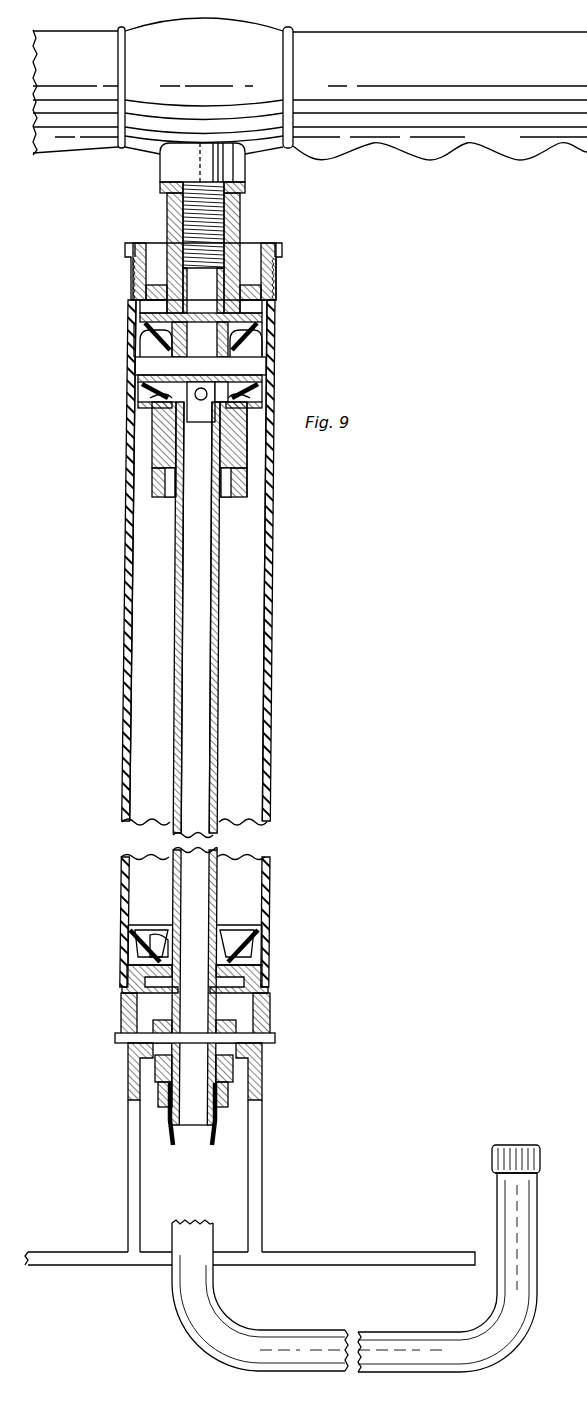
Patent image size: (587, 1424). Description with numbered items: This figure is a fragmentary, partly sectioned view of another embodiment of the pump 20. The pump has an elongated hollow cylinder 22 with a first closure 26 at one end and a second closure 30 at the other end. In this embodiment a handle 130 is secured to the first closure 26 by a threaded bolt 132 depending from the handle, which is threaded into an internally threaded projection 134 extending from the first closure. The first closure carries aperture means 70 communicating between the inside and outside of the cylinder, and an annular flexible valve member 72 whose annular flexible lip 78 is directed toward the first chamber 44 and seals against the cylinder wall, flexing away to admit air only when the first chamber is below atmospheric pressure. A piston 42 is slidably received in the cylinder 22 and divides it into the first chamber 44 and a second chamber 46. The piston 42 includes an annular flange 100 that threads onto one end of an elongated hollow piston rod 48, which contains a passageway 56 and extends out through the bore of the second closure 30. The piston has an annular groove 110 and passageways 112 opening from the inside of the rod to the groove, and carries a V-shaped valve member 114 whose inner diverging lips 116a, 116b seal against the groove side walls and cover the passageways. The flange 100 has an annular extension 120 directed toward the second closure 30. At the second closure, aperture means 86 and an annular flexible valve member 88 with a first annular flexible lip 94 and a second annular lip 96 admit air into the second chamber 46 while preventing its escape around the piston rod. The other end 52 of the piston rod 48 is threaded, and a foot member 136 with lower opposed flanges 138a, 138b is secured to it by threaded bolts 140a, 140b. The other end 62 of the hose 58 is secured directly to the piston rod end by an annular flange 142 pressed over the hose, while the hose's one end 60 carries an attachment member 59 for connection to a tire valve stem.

The handle 130 is at (378, 31).
The threaded bolt 132 is at (236, 221).
The internally threaded projection 134 is at (236, 248).
The first closure 26 is at (196, 253).
The aperture means 70 is at (255, 285).
The annular flexible valve member 72 is at (140, 323).
The annular flexible lip 78 is at (254, 353).
The first chamber 44 is at (158, 362).
The inner diverging lip 116b is at (176, 380).
The V-shaped valve member 114 is at (138, 393).
The passageways 112 is at (201, 400).
The annular groove 110 is at (232, 412).
The inner diverging lip 116a is at (152, 420).
The annular flange 100 is at (152, 440).
The annular extension 120 is at (152, 480).
The piston 42 is at (252, 458).
The elongated hollow cylinder 22 is at (126, 553).
The pump 20 is at (121, 645).
The passageway 56 is at (198, 598).
The elongated hollow piston rod 48 is at (217, 667).
The second chamber 46 is at (165, 611).
The first annular flexible lip 94 is at (143, 923).
The second annular lip 96 is at (160, 927).
The annular flexible valve member 88 is at (130, 963).
The aperture means 86 is at (121, 1005).
The other end of the piston rod 52 is at (236, 1015).
The threaded bolt 140a is at (237, 1028).
The second closure 30 is at (128, 1046).
The threaded bolt 140b is at (248, 1070).
The annular flange 142 is at (158, 1093).
The other end of the hose 62 is at (220, 1118).
The foot member 136 is at (263, 1160).
The lower opposed flange 138a is at (70, 1252).
The lower opposed flange 138b is at (382, 1213).
The hose 58 is at (390, 1331).
The one end of the hose 60 is at (497, 1190).
The attachment member 59 is at (490, 1160).